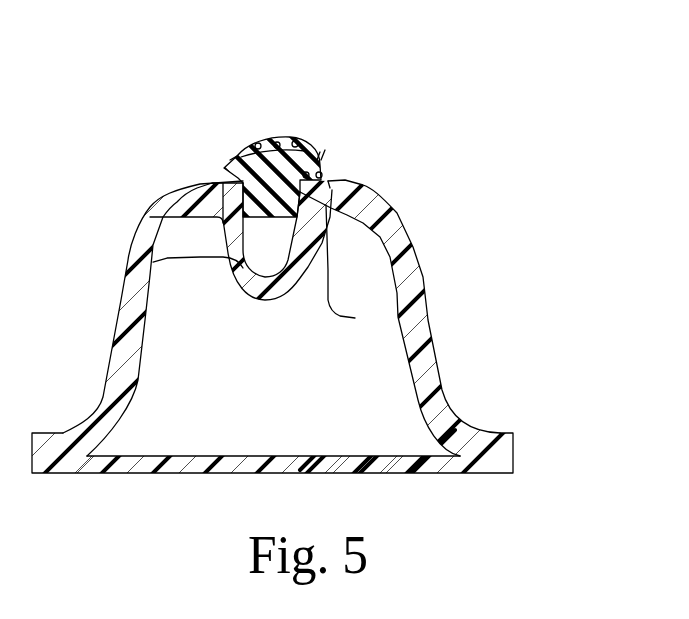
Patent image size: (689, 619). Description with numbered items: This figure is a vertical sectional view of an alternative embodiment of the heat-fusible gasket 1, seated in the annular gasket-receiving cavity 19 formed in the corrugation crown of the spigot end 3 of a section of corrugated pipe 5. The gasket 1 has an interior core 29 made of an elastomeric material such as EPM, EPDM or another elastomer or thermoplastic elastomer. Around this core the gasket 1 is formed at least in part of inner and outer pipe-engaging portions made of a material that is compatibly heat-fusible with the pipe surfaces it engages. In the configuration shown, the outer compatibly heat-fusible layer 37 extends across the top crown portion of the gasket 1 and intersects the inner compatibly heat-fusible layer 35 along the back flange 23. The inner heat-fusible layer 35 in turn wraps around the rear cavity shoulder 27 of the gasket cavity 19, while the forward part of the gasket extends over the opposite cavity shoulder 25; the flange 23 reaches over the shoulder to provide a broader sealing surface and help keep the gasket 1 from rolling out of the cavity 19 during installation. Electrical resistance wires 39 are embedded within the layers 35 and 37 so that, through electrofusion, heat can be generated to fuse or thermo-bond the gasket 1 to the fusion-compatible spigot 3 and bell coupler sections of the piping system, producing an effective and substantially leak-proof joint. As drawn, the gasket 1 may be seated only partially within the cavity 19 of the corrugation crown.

The gasket 1 is at (292, 200).
The spigot end 3 is at (460, 318).
The pipe 5 is at (505, 460).
The gasket-receiving cavity 19 is at (153, 262).
The rearward flange element 23 is at (325, 150).
The cavity shoulder 25 is at (150, 217).
The cavity shoulder 27 is at (330, 188).
The interior core 29 is at (230, 160).
The inner compatibly heat-fusible layer 35 is at (340, 316).
The outer compatibly heat-fusible layer 37 is at (320, 152).
The electrical resistance wires 39 is at (261, 127).